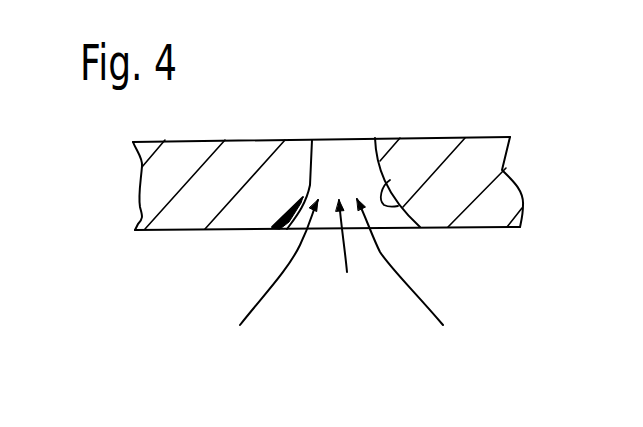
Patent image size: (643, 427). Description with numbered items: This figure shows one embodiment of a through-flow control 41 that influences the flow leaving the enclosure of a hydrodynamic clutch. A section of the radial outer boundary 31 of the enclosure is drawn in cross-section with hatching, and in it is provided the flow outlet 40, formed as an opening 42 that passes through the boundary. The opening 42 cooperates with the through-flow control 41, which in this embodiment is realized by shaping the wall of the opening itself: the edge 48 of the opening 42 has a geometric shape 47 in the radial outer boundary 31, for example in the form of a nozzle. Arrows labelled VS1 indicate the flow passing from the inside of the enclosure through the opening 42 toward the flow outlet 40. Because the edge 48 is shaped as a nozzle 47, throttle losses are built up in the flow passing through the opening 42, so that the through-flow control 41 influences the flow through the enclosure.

The radial outer boundary 31 is at (477, 162).
The flow outlet 40 is at (362, 152).
The through-flow control 41 is at (342, 259).
The opening 42 is at (323, 152).
The geometric shape 47 is at (392, 184).
The edge 48 is at (292, 229).
The flow velocity VS1 is at (354, 289).